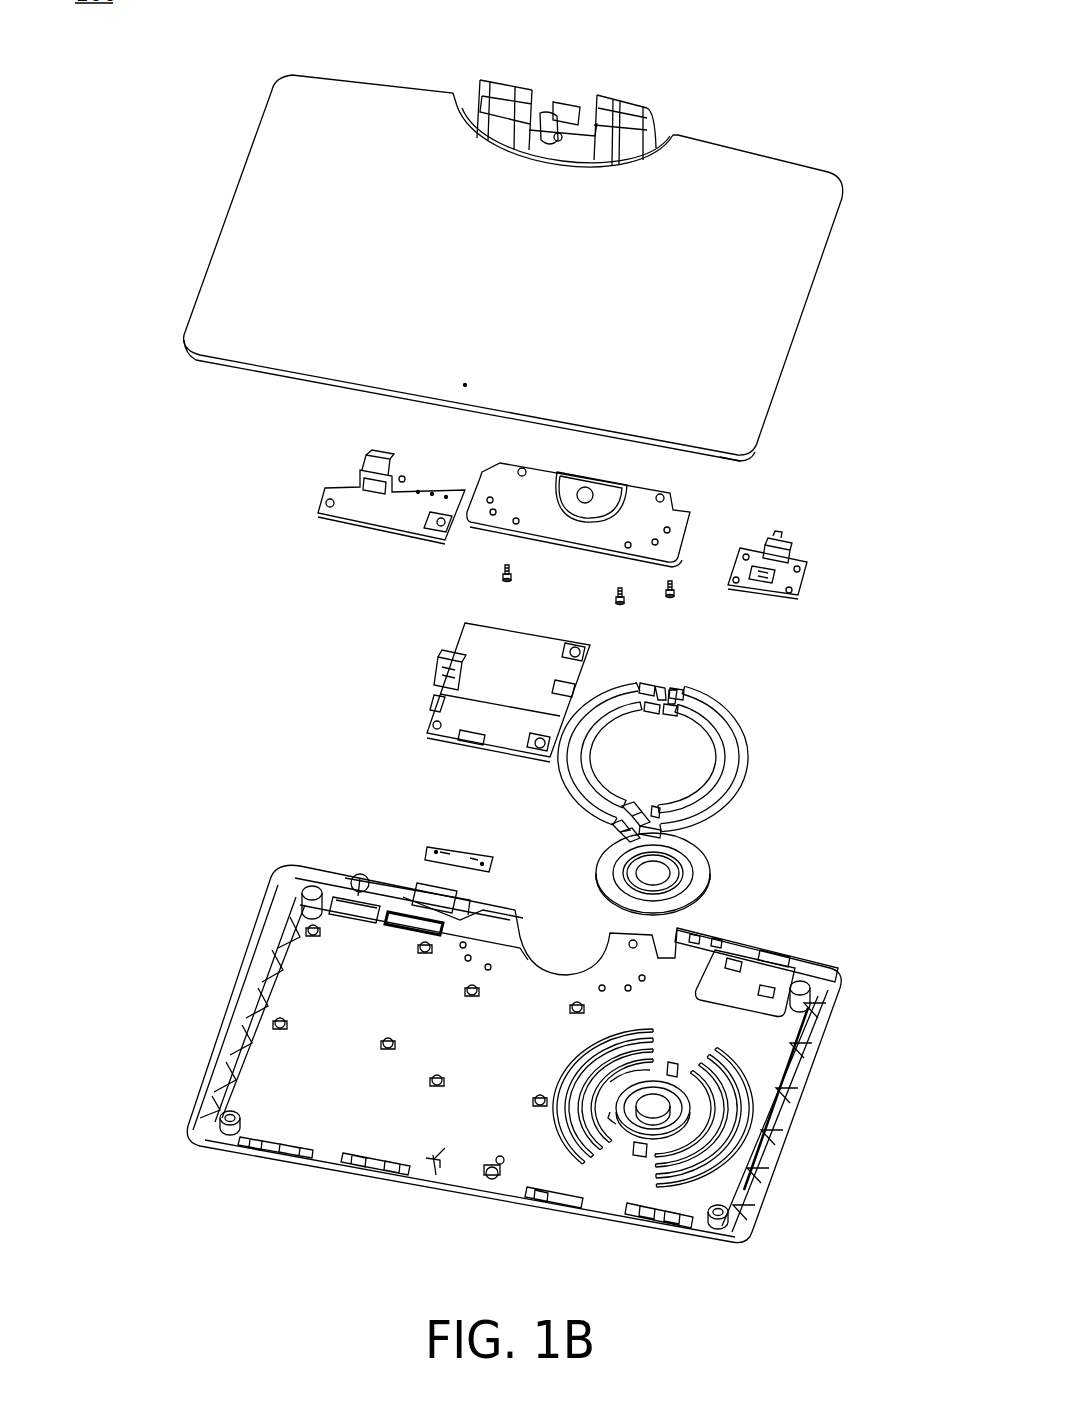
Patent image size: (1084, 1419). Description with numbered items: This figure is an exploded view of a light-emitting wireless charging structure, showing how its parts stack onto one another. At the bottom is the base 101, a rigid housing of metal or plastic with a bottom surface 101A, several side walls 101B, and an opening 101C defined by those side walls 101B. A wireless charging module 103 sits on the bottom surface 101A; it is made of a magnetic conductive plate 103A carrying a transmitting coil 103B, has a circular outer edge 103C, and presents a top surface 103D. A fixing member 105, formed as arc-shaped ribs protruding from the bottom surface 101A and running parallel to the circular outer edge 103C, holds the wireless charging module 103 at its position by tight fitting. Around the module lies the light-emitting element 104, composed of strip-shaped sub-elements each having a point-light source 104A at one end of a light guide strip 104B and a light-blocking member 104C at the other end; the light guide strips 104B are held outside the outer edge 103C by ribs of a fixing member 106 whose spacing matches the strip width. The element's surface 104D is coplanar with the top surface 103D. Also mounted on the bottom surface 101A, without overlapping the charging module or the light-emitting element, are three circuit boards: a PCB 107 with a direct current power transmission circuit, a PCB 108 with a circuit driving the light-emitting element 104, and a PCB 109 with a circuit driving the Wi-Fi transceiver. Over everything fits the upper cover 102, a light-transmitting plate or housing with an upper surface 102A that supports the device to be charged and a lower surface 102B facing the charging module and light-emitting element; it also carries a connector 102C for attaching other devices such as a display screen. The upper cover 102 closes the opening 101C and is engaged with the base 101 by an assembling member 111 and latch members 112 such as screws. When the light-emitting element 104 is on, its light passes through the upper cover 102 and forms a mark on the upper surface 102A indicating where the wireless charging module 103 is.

The base 101 is at (502, 1060).
The bottom surface 101A is at (529, 1039).
The side walls 101B is at (222, 1080).
The opening 101C is at (284, 1160).
The upper cover 102 is at (800, 187).
The upper surface 102A is at (742, 270).
The lower surface 102B is at (748, 458).
The connector 102C is at (653, 108).
The wireless charging module 103 is at (765, 884).
The magnetic conductive plate 103A is at (700, 892).
The transmitting coil 103B is at (705, 880).
The circular outer edge 103C is at (692, 908).
The top surface 103D is at (695, 852).
The light-emitting element 104 is at (748, 759).
The point-light source 104A is at (703, 680).
The light guide strip 104B is at (742, 752).
The light-blocking member 104C is at (663, 825).
The surface 104D is at (748, 732).
The fixing member 105 is at (637, 1156).
The fixing member 106 is at (723, 1157).
The PCB 107 is at (325, 496).
The PCB 108 is at (470, 642).
The PCB 109 is at (800, 570).
The assembling member 111 is at (672, 497).
The latch members 112 is at (675, 592).